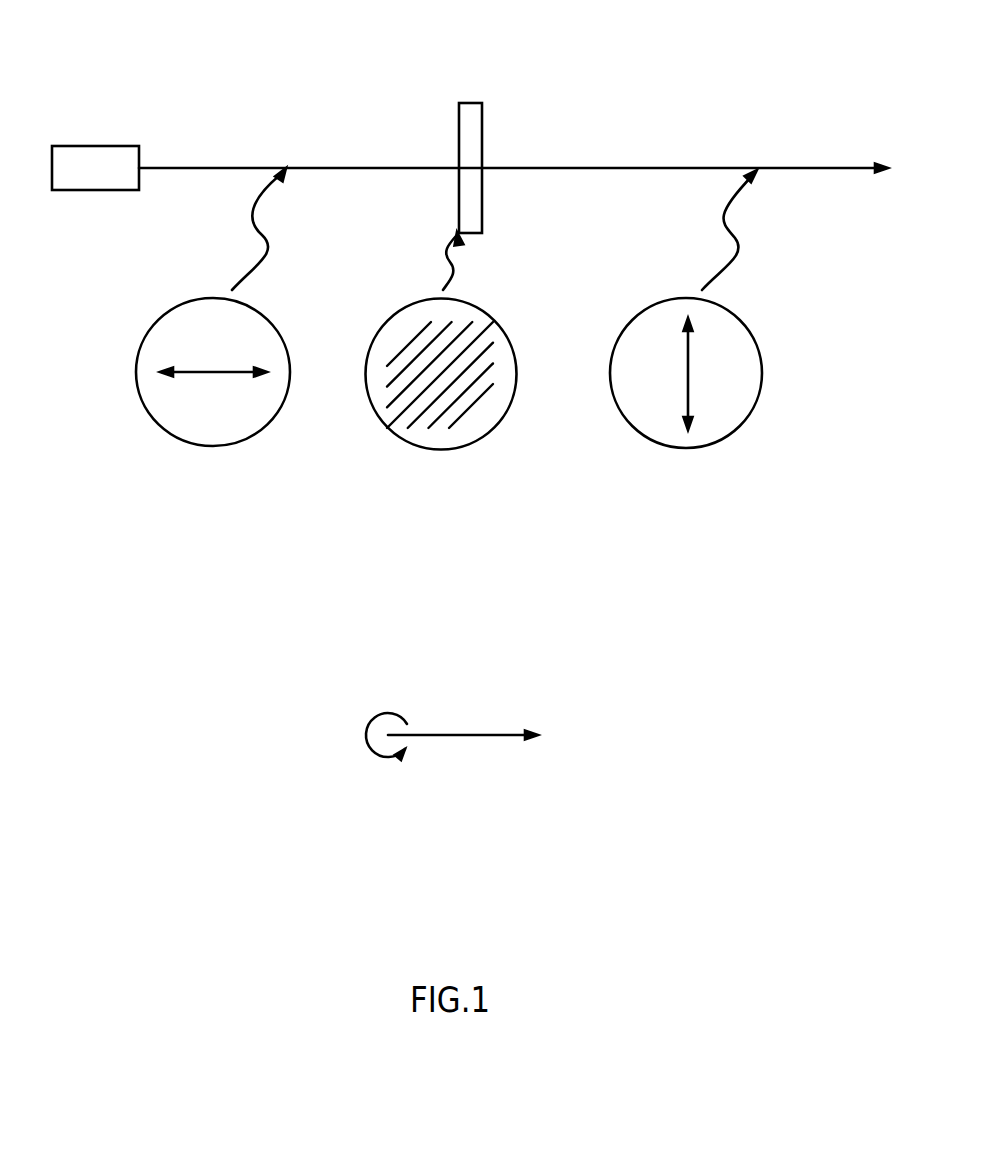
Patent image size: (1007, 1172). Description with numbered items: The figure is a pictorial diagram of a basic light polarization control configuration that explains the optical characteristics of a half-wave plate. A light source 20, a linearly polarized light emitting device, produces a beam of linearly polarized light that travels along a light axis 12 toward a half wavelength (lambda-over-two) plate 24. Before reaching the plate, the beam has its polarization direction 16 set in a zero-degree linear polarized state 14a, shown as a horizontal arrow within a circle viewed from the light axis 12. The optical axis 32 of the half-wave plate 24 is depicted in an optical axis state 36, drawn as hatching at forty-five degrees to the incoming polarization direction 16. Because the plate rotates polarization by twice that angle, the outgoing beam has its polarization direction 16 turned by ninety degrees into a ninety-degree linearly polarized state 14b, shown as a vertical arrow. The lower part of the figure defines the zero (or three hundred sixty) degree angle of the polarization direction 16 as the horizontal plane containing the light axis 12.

The light source 20 is at (107, 146).
The light axis 12 is at (187, 168).
The half wavelength (λ/2) plate 24 is at (478, 103).
The zero-degree linear polarized state 14a is at (223, 447).
The 90-degree linearly polarized state 14b is at (710, 448).
The polarization direction 16 is at (209, 370).
The optical axis 32 is at (483, 395).
The optical axis state 36 is at (438, 450).